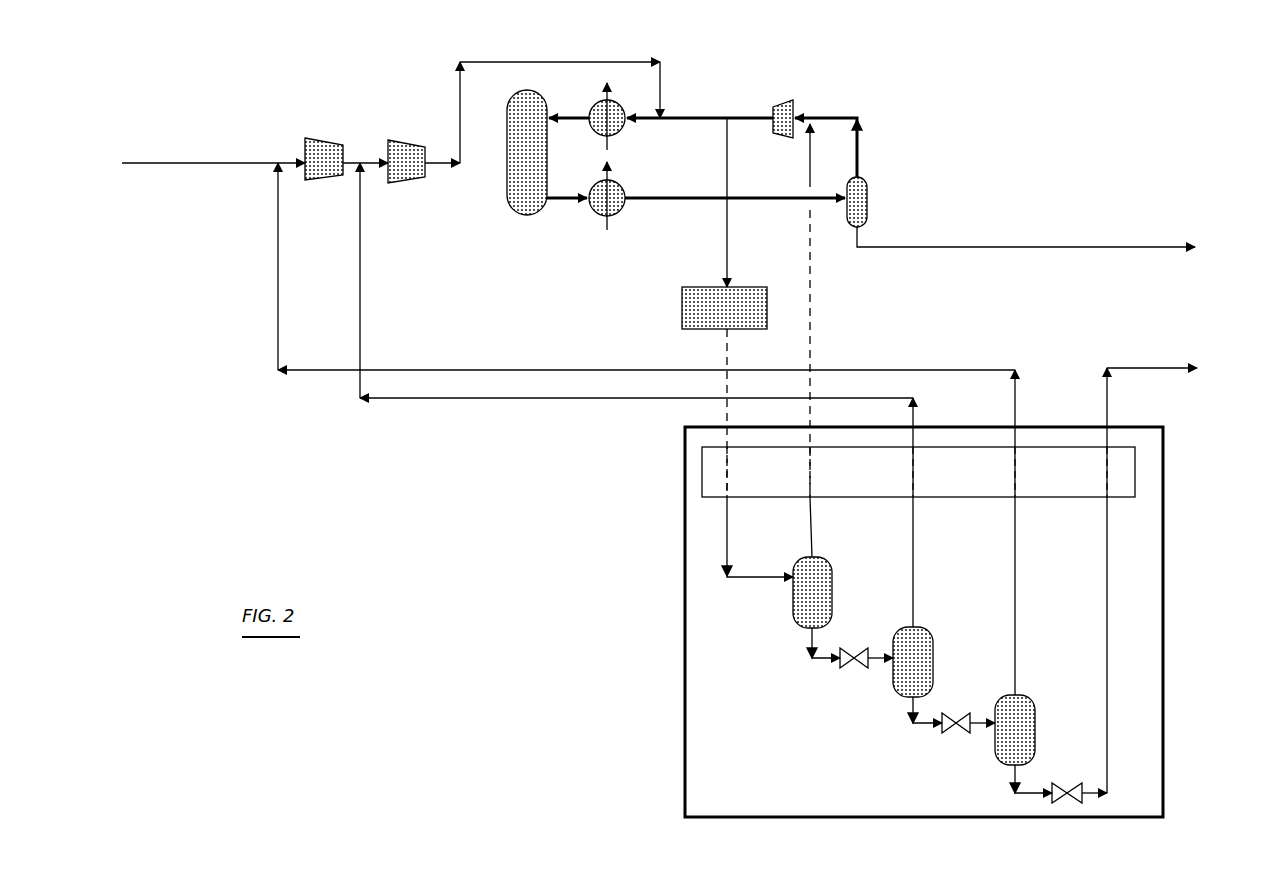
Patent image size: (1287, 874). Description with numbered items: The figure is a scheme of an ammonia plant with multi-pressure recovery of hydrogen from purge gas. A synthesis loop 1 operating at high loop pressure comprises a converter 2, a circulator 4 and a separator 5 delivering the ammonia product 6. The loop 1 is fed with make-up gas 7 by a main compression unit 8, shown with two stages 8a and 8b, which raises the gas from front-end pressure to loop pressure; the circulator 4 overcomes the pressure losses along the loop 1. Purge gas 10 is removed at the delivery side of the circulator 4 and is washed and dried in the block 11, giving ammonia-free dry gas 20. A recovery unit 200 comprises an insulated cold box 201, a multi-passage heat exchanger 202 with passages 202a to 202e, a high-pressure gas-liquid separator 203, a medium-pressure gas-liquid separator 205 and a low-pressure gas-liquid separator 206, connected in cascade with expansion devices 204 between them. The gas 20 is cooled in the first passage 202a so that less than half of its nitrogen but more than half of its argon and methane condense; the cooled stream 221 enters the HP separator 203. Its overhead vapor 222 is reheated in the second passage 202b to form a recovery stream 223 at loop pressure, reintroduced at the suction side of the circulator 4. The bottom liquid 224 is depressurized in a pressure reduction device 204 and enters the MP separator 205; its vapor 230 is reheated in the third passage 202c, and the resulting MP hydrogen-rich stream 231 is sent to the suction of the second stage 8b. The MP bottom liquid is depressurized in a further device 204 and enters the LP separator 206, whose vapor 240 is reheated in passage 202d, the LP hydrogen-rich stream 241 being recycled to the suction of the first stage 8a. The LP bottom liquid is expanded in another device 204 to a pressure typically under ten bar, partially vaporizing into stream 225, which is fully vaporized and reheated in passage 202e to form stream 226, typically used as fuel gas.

The synthesis loop 1 is at (858, 76).
The converter 2 is at (512, 205).
The circulator 4 is at (782, 107).
The separator 5 is at (868, 206).
The ammonia product 6 is at (1037, 241).
The make-up gas 7 is at (221, 163).
The main compression unit 8 is at (362, 144).
The first compression stage 8a is at (323, 140).
The second compression stage 8b is at (408, 183).
The purge gas 10 is at (730, 232).
The section 11 is at (682, 305).
The ammonia-free dry gas 20 is at (732, 348).
The recovery unit 200 is at (1194, 544).
The insulated cold box 201 is at (685, 668).
The multi-passage heat exchanger 202 is at (702, 470).
The first passage 202a is at (730, 470).
The second passage 202b is at (814, 470).
The third passage 202c is at (916, 470).
The passage 202d is at (1018, 470).
The passage 202e is at (1106, 478).
The high-pressure gas-liquid separator 203 is at (793, 600).
The expansion device 204 is at (848, 668).
The medium-pressure gas-liquid separator 205 is at (893, 685).
The low-pressure gas-liquid separator 206 is at (1035, 730).
The cooled stream 221 is at (730, 533).
The overhead vapor 222 is at (814, 527).
The recovery stream 223 is at (815, 305).
The bottom liquid 224 is at (815, 641).
The stream 225 is at (1108, 660).
The fuel gas stream 226 is at (1147, 368).
The vapor 230 is at (916, 556).
The MP hydrogen-rich stream 231 is at (483, 400).
The vapor 240 is at (1018, 597).
The LP hydrogen-rich stream 241 is at (548, 370).